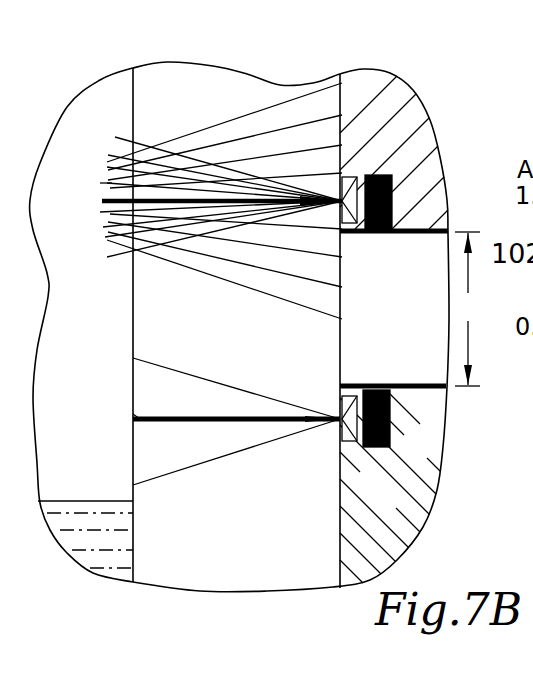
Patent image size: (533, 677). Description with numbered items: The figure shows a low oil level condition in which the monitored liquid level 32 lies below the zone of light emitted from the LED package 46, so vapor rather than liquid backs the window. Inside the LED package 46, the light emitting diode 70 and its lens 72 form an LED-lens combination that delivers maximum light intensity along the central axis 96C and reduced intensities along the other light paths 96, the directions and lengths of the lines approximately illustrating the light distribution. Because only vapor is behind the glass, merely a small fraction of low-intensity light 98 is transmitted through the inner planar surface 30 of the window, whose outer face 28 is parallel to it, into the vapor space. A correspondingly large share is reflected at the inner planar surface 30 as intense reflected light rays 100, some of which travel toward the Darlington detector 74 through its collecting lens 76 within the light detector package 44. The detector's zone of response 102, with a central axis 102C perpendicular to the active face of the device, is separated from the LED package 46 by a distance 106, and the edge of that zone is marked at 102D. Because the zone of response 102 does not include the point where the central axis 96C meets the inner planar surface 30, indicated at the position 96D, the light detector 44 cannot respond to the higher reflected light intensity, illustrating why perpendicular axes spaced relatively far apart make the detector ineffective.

The outer face 28 is at (338, 520).
The inner planar surface 30 is at (133, 108).
The liquid level 32 is at (98, 500).
The light detector 44 is at (432, 495).
The LED package 46 is at (393, 102).
The light emitting diode 70 is at (392, 187).
The lens 72 is at (345, 178).
The Darlington detector 74 is at (401, 427).
The collecting lens 76 is at (350, 443).
The light 96 is at (237, 173).
The central axis 96C is at (150, 200).
The intersection position 96D is at (133, 202).
The transmitted light 98 is at (107, 183).
The reflected light rays 100 is at (213, 287).
The zone of response 102 is at (238, 452).
The central axis of light detector 102C is at (162, 422).
The second bundle entry point 102D is at (133, 412).
The distance 106 is at (478, 309).